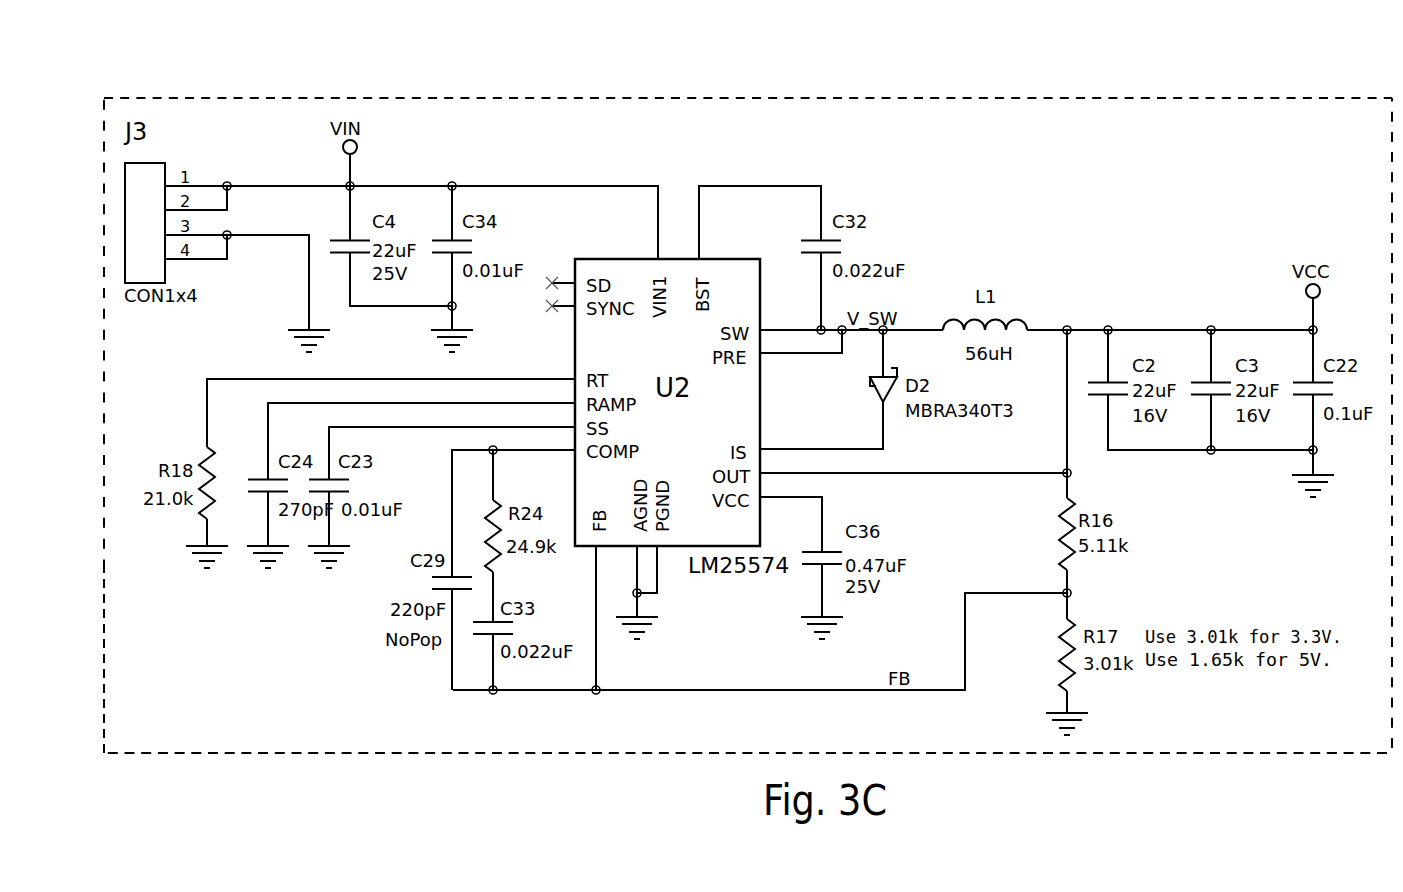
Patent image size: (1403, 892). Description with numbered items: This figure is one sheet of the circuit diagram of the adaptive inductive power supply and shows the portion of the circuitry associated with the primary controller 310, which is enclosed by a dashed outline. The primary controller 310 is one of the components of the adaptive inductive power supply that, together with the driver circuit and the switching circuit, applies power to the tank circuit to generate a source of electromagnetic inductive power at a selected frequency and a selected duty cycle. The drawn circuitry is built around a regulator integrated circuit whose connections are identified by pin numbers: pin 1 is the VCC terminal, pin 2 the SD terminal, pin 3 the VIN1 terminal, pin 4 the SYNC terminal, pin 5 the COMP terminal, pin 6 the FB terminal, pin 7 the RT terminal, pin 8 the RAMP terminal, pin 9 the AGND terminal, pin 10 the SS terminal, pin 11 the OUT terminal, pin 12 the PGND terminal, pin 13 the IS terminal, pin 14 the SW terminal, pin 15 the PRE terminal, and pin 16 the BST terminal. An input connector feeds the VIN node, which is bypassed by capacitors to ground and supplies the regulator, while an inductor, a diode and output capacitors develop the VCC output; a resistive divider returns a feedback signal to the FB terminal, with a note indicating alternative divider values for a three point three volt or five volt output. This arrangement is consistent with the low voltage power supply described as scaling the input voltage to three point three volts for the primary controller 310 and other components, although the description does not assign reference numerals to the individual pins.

The primary controller 310 is at (675, 98).
The VCC pin of U2 1 is at (773, 488).
The SD pin of U2 2 is at (560, 277).
The VIN1 pin of U2 3 is at (647, 247).
The SYNC pin of U2 4 is at (560, 300).
The COMP pin of U2 5 is at (563, 441).
The FB pin of U2 6 is at (595, 560).
The RT pin of U2 7 is at (563, 369).
The RAMP pin of U2 8 is at (563, 393).
The AGND pin of U2 9 is at (635, 560).
The SS pin of U2 10 is at (559, 417).
The OUT pin of U2 11 is at (777, 464).
The PGND pin of U2 12 is at (655, 564).
The IS pin of U2 13 is at (777, 440).
The SW pin of U2 14 is at (777, 320).
The PRE pin of U2 15 is at (777, 344).
The BST pin of U2 16 is at (689, 241).